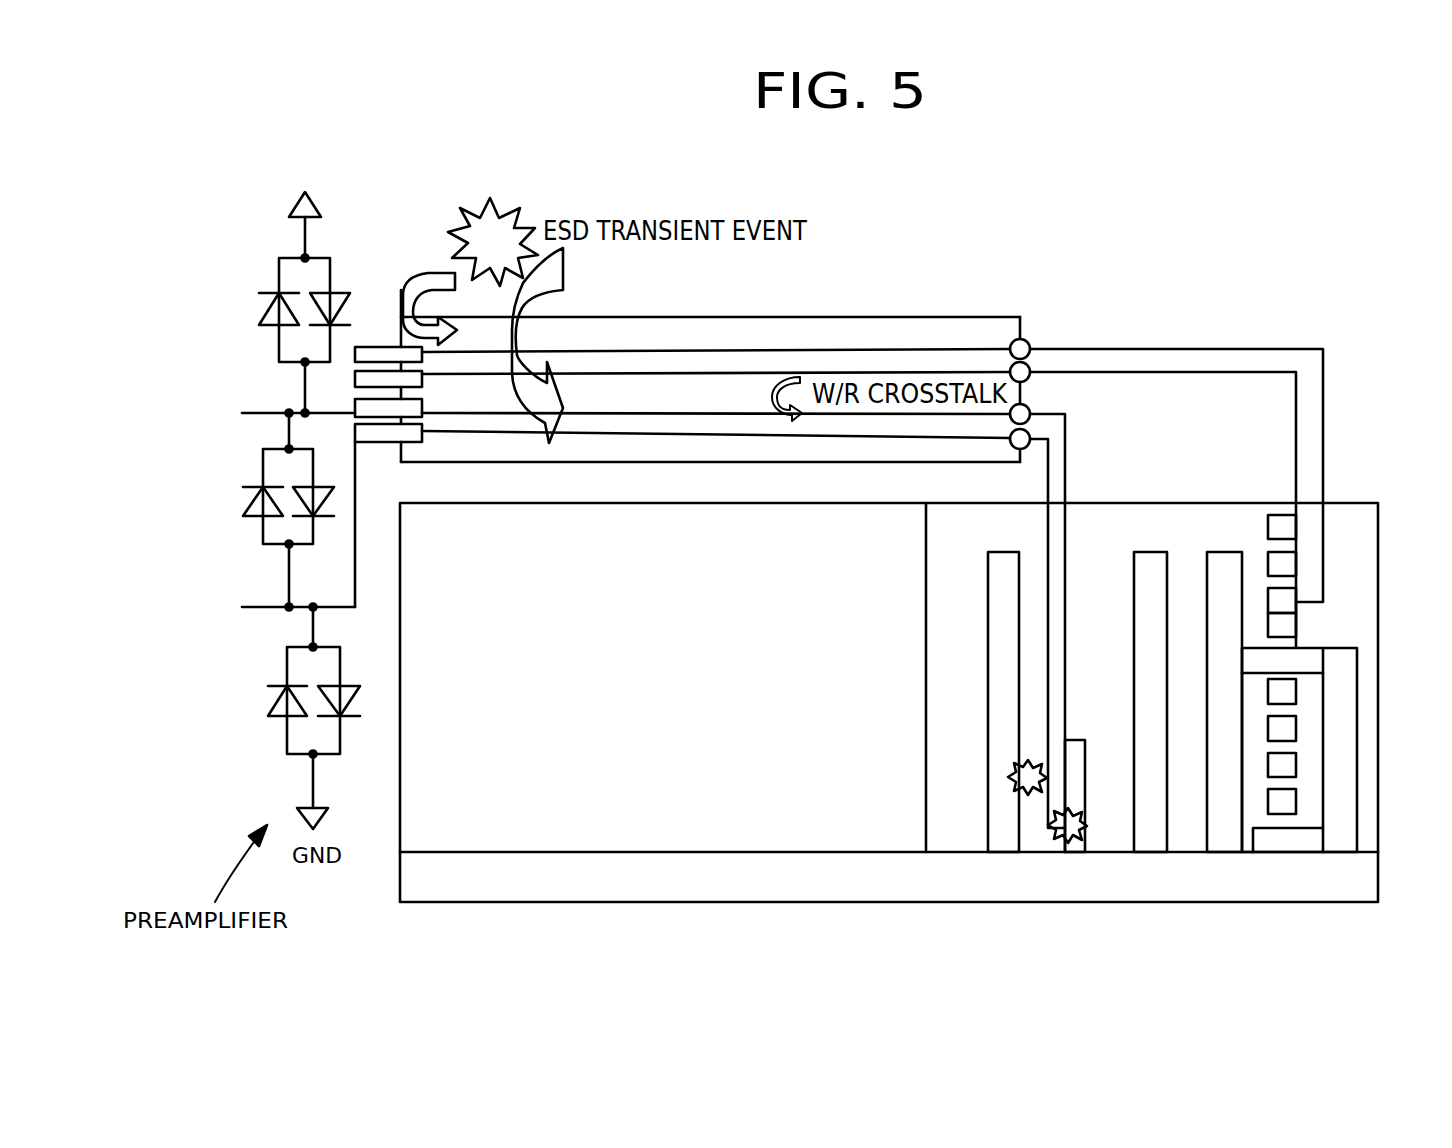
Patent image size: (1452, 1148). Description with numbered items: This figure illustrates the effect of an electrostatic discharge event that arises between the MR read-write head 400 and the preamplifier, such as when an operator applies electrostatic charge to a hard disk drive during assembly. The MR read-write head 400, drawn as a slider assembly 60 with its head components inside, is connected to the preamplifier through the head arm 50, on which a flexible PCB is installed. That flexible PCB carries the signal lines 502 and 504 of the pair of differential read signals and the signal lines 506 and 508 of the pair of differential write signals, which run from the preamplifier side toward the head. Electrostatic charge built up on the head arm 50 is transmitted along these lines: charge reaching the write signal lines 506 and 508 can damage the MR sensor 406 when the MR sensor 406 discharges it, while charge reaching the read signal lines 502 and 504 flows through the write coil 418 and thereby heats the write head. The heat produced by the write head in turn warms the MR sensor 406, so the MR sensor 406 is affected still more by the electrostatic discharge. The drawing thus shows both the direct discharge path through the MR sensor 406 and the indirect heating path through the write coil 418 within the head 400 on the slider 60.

The head arm 50 is at (724, 317).
The signal line of the pair of differential read signals 502 is at (1046, 481).
The signal line of the pair of differential read signals 504 is at (1067, 464).
The signal line of the pair of differential write signals 506 is at (1235, 374).
The signal line of the pair of differential write signals 508 is at (1260, 346).
The MR read-write head 400 is at (982, 541).
The write coil 418 is at (1268, 527).
The MR sensor 406 is at (1073, 740).
The head gimbal assembly / slider body 60 is at (1380, 606).